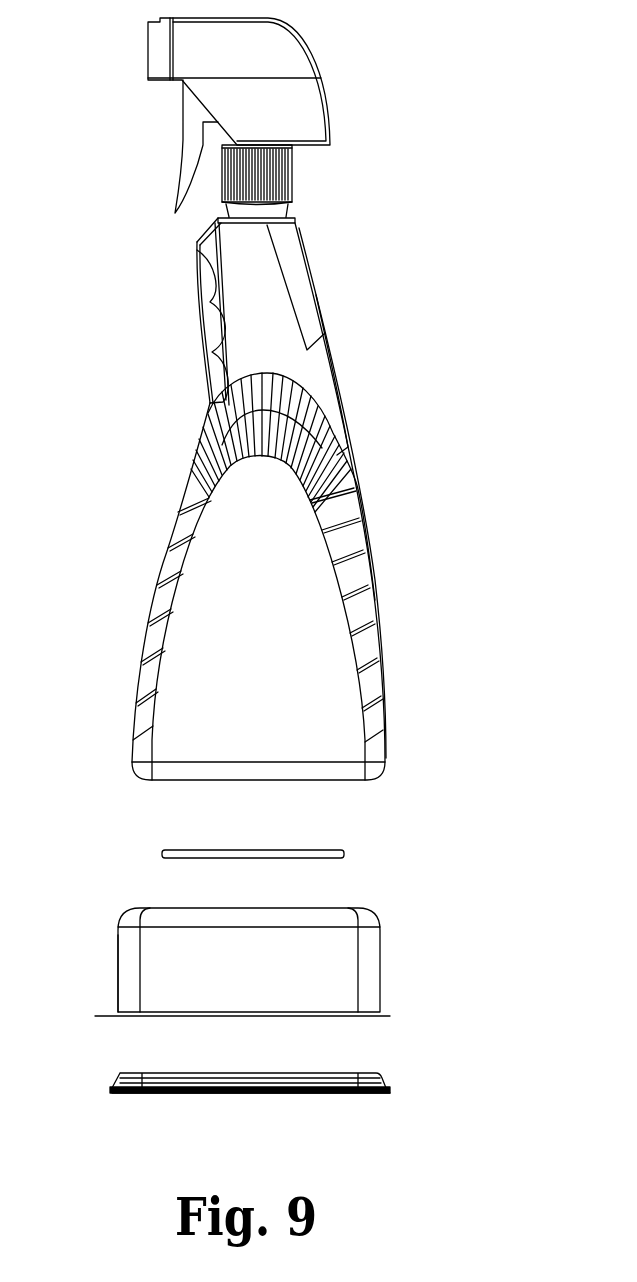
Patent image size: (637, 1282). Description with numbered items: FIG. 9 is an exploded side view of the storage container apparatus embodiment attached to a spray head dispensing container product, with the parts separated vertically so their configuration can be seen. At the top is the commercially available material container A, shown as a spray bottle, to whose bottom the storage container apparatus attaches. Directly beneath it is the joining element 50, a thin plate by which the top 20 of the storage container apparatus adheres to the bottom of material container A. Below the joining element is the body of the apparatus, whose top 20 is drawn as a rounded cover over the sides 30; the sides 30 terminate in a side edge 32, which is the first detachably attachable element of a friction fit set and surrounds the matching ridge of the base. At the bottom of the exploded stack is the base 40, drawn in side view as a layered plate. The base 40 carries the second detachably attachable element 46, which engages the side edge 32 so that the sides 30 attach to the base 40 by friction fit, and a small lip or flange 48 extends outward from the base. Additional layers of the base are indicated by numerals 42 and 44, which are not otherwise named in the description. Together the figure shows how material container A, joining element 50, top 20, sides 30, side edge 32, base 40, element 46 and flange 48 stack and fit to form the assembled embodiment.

The material container A is at (385, 485).
The top 20 is at (235, 943).
The sides 30 is at (120, 982).
The side edge 32 is at (120, 1013).
The base 40 is at (267, 1108).
The top plate 42 is at (172, 1072).
The adhesive layer 44 is at (188, 1093).
The second detachably attachable element 46 is at (120, 1077).
The lip or flange 48 is at (110, 1091).
The joining element 50 is at (345, 853).